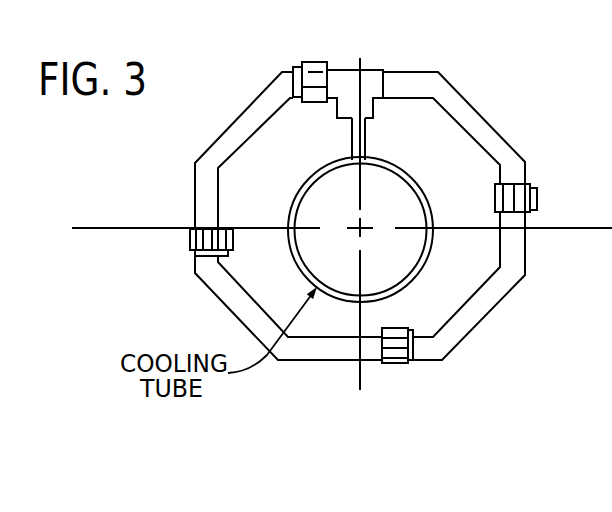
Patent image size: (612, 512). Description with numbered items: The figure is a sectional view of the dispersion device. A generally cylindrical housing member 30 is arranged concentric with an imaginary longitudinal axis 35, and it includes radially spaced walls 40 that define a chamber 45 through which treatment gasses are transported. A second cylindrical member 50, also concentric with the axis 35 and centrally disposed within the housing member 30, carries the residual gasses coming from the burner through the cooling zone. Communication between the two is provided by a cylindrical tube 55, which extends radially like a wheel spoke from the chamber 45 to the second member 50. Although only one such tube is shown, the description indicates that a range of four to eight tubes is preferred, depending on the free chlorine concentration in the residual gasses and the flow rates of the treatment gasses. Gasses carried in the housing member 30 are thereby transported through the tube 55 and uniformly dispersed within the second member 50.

The housing member 30 is at (457, 94).
The imaginary longitudinal axis 35 is at (362, 232).
The radially spaced walls 40 is at (364, 70).
The chamber 45 is at (384, 88).
The second cylindrical member 50 is at (432, 200).
The cylindrical tube 55 is at (352, 137).